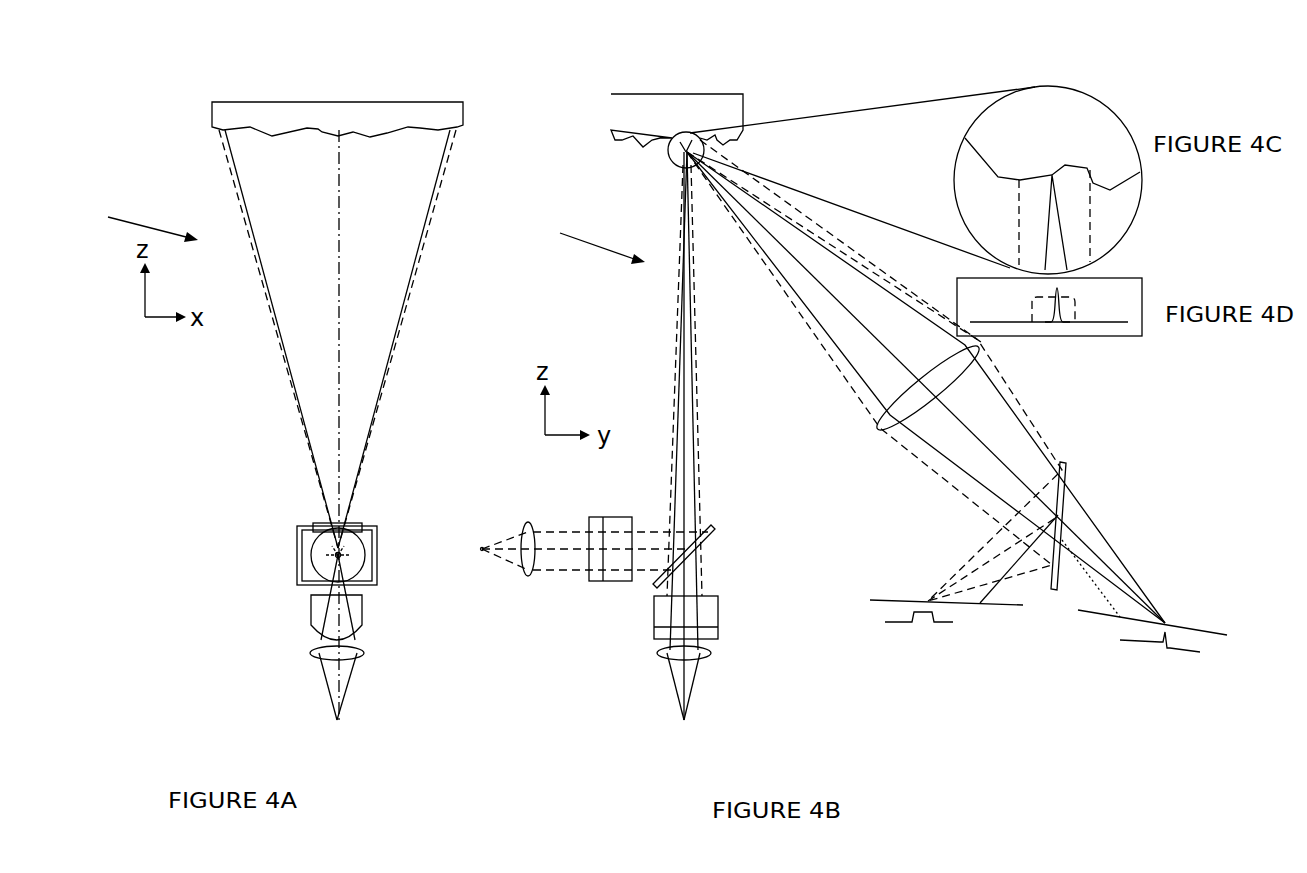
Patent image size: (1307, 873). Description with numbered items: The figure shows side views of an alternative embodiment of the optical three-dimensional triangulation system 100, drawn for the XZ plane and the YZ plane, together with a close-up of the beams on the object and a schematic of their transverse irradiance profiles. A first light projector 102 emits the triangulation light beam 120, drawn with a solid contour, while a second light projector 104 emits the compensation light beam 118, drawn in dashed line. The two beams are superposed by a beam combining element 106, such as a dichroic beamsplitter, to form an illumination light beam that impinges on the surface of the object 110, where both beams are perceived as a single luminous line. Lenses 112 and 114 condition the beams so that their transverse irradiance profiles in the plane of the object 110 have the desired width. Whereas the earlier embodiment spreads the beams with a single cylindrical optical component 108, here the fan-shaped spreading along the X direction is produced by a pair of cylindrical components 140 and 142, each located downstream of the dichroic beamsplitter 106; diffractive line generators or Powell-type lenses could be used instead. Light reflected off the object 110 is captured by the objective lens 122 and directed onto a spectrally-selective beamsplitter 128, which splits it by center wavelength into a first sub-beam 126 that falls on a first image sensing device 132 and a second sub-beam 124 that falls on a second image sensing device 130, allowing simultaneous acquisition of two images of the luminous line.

In FIG. 4A, the optical 3D triangulation system 100 is at (129, 223).
In FIG. 4B, the optical 3D triangulation system 100 is at (575, 245).
In FIG. 4A, the first light projector 102 is at (337, 722).
In FIG. 4B, the first light projector 102 is at (684, 722).
In FIG. 4A, the second light projector 104 is at (330, 553).
In FIG. 4B, the second light projector 104 is at (482, 548).
In FIG. 4A, the beam combining element 106 is at (300, 548).
In FIG. 4B, the beam combining element 106 is at (716, 542).
In FIG. 4A, the cylindrical optical component 108 is at (336, 530).
In FIG. 4B, the cylindrical optical component 108 is at (668, 567).
In FIG. 4A, the object 110 is at (428, 108).
In FIG. 4B, the object 110 is at (727, 98).
In FIG. 4C, the object 110 is at (1068, 141).
In FIG. 4A, the lens 112 is at (315, 652).
In FIG. 4B, the lens 112 is at (702, 656).
In FIG. 4B, the lens 114 is at (527, 573).
In FIG. 4A, the compensation light beam 118 is at (450, 158).
In FIG. 4A, the triangulation light beam 120 is at (420, 240).
In FIG. 4B, the objective lens 122 is at (887, 425).
In FIG. 4B, the second sub-beam 124 is at (805, 320).
In FIG. 4B, the first sub-beam 126 is at (832, 340).
In FIG. 4B, the spectrally-selective beamsplitter 128 is at (1066, 464).
In FIG. 4B, the second image sensing device 130 is at (993, 606).
In FIG. 4B, the first image sensing device 132 is at (1220, 636).
In FIG. 4B, the cylindrical component 140 is at (630, 518).
In FIG. 4B, the cylindrical component 142 is at (710, 610).